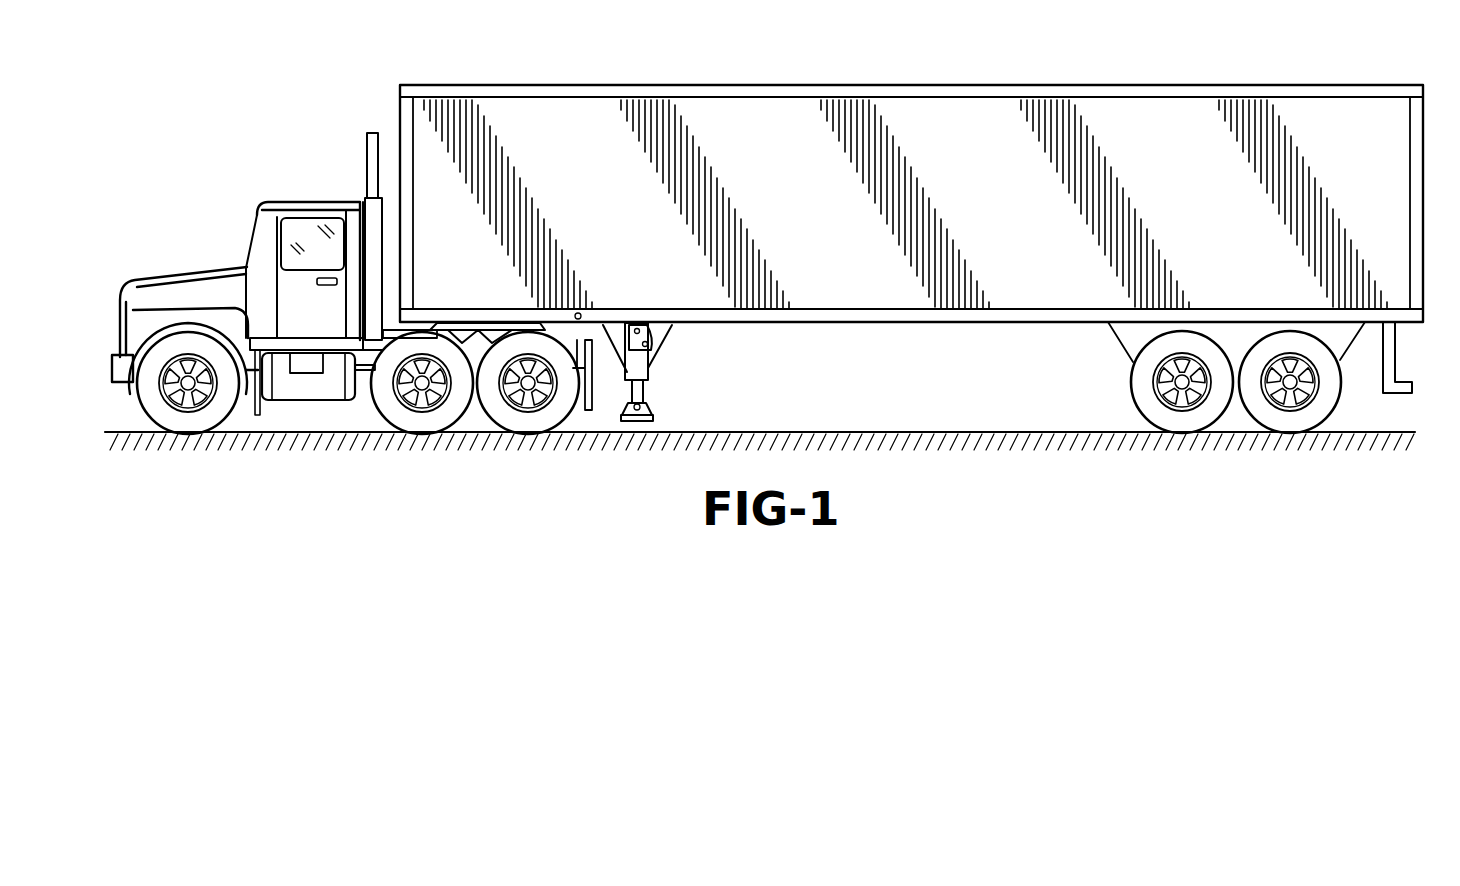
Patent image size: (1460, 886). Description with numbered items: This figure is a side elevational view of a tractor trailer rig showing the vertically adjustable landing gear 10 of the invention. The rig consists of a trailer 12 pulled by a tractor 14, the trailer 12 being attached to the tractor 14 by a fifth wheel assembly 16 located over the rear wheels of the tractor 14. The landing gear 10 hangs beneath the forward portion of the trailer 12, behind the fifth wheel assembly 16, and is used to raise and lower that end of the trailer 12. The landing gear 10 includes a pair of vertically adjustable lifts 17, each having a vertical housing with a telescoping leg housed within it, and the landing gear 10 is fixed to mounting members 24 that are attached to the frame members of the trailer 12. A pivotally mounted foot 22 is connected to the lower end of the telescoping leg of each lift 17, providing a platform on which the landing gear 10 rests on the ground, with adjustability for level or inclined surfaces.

The landing gear 10 is at (677, 359).
The trailer 12 is at (616, 87).
The tractor 14 is at (285, 200).
The fifth wheel assembly 16 is at (470, 326).
The vertically adjustable lift 17 is at (628, 387).
The foot 22 is at (638, 421).
The mounting member 24 is at (657, 328).